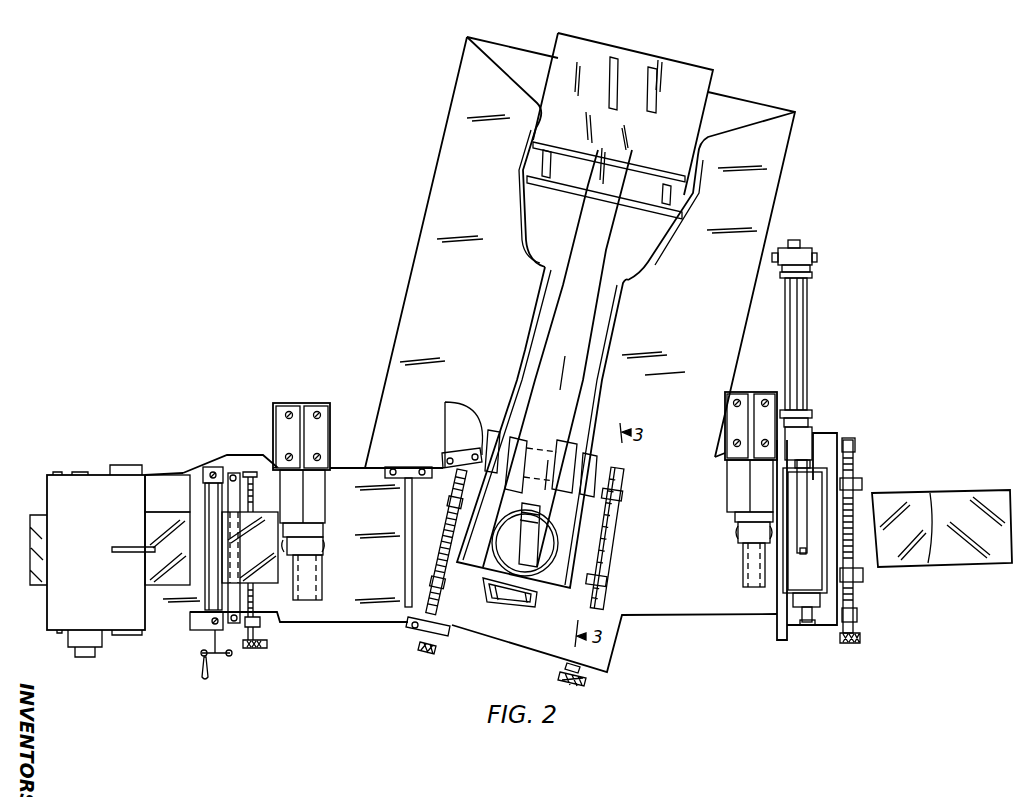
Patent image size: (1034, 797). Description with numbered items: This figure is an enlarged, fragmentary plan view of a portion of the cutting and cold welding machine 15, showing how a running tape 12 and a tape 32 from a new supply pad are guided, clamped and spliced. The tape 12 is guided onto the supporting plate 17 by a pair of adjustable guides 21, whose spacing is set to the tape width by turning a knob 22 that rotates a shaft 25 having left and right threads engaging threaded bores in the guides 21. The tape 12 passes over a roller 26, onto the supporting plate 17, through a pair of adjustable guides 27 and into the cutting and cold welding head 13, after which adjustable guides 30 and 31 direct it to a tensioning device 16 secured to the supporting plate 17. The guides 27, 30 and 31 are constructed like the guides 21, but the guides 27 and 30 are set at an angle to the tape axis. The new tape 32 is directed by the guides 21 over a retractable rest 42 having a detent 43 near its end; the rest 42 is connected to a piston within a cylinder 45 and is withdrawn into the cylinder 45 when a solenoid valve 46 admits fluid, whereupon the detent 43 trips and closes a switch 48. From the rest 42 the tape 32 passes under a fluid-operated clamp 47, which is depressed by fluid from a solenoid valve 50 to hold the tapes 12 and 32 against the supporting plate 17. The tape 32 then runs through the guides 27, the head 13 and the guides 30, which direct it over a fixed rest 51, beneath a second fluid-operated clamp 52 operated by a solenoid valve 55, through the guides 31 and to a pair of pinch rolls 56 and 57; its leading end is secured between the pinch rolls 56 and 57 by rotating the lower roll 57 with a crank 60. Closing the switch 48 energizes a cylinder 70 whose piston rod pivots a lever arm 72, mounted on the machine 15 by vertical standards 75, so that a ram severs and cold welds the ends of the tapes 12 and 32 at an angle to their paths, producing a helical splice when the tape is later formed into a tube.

The tape 12 is at (966, 497).
The head 13 is at (481, 604).
The cutting and cold welding machine 15 is at (345, 396).
The tensioning device 16 is at (105, 476).
The supporting plate 17 is at (333, 621).
The adjustable guides 21 is at (864, 487).
The knob 22 is at (850, 628).
The shaft 25 is at (858, 602).
The roller 26 is at (783, 598).
The adjustable guides 27 is at (616, 456).
The adjustable guides 30 is at (437, 579).
The adjustable guides 31 is at (256, 491).
The tape 32 is at (915, 499).
The retractable rest 42 is at (800, 492).
The detent 43 is at (798, 554).
The cylinder 45 is at (808, 328).
The solenoid valve 46 is at (814, 257).
The fluid-operated clamp 47 is at (745, 569).
The switch 48 is at (812, 443).
The solenoid valve 50 is at (738, 538).
The fixed rest 51 is at (406, 574).
The second fluid-operated clamp 52 is at (320, 580).
The solenoid valve 55 is at (325, 542).
The pinch roll 56 is at (207, 491).
The pinch roll 57 is at (203, 612).
The crank 60 is at (219, 652).
The cylinder 70 is at (714, 78).
The lever arm 72 is at (612, 245).
The vertical standards 75 is at (528, 440).